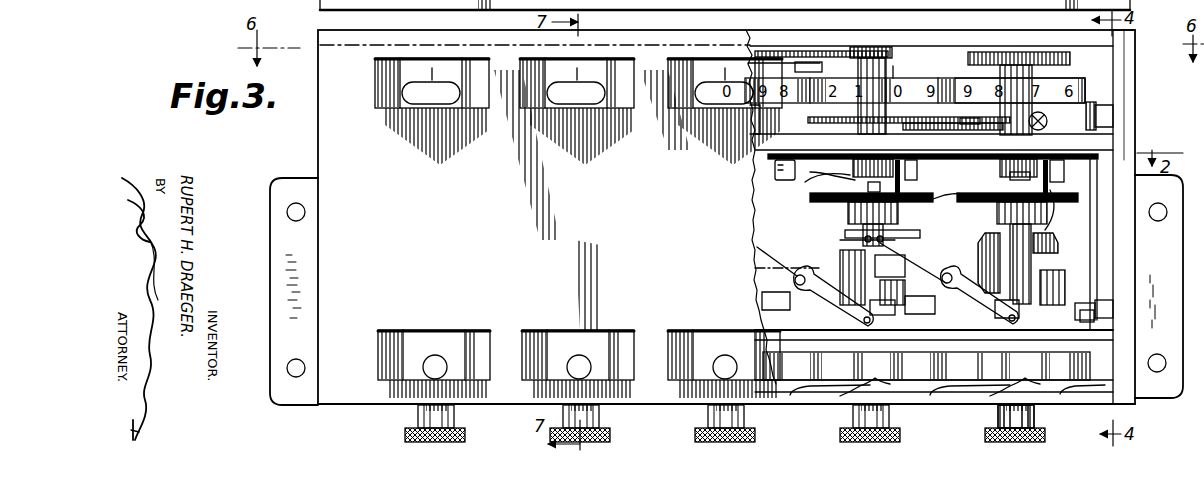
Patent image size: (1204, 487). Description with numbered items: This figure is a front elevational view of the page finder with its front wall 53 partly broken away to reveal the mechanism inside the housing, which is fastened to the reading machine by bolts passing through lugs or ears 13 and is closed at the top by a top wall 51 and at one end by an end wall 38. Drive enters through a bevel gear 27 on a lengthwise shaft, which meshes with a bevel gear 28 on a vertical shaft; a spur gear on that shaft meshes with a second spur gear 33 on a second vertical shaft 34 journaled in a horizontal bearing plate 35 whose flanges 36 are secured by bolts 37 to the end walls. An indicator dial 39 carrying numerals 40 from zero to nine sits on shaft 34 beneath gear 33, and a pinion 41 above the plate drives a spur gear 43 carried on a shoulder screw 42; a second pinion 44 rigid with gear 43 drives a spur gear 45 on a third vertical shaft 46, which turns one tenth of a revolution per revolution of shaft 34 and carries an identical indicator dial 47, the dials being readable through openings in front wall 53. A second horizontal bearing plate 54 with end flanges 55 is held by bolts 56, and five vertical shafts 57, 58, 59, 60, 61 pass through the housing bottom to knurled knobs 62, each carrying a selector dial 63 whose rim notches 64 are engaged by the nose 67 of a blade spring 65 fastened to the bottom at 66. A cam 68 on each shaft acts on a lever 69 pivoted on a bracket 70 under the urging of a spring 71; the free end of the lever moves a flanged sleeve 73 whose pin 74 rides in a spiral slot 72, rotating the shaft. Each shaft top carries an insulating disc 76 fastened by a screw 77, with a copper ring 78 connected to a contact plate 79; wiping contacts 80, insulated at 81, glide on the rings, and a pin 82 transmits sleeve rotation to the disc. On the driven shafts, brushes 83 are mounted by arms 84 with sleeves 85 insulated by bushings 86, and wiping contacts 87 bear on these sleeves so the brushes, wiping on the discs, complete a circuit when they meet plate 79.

The lugs or ears 13 is at (298, 190).
The bevel gear 27 is at (1010, 258).
The bevel gear 28 is at (1050, 247).
The second spur gear 33 is at (1060, 48).
The second vertical shaft 34 is at (1113, 46).
The horizontal bearing plate 35 is at (780, 126).
The flanges 36 is at (1108, 118).
The bolts 37 is at (1105, 125).
The end wall 38 is at (1124, 86).
The indicator dial 39 is at (418, 82).
The numerals 40 is at (965, 82).
The pinion 41 is at (885, 50).
The shoulder screw 42 is at (939, 91).
The spur gear 43 is at (800, 55).
The second pinion 44 is at (820, 67).
The spur gear 45 is at (764, 55).
The third vertical shaft 46 is at (858, 115).
The indicator dial 47 is at (893, 78).
The top wall 51 is at (318, 32).
The front wall 53 is at (548, 207).
The second horizontal bearing plate 54 is at (1040, 332).
The end flanges 55 is at (1100, 300).
The bolts 56 is at (1050, 342).
The vertical shaft 57 is at (1034, 410).
The vertical shaft 58 is at (890, 410).
The vertical shaft 59 is at (748, 410).
The vertical shaft 60 is at (596, 410).
The vertical shaft 61 is at (452, 412).
The knurled knobs 62 is at (467, 436).
The selector dial 63 is at (440, 360).
The notches 64 is at (858, 395).
The blade springs 65 is at (796, 396).
The fastening point 66 is at (1113, 392).
The nose or projection 67 is at (1032, 352).
The cam 68 is at (1052, 268).
The lever 69 is at (766, 262).
The bracket 70 is at (792, 305).
The spring 71 is at (812, 268).
The spiral slot 72 is at (882, 277).
The sleeve 73 is at (848, 234).
The pin 74 is at (855, 242).
The circular disc 76 is at (984, 177).
The screw 77 is at (968, 213).
The copper ring 78 is at (840, 215).
The contact plate 79 is at (860, 188).
The wiping contacts 80 is at (1090, 230).
The insulation 81 is at (1110, 150).
The pin 82 is at (808, 144).
The electric brushes 83 is at (895, 217).
The arms 84 is at (945, 157).
The sleeves 85 is at (885, 184).
The bushings 86 is at (1016, 158).
The wiping contacts 87 is at (977, 159).